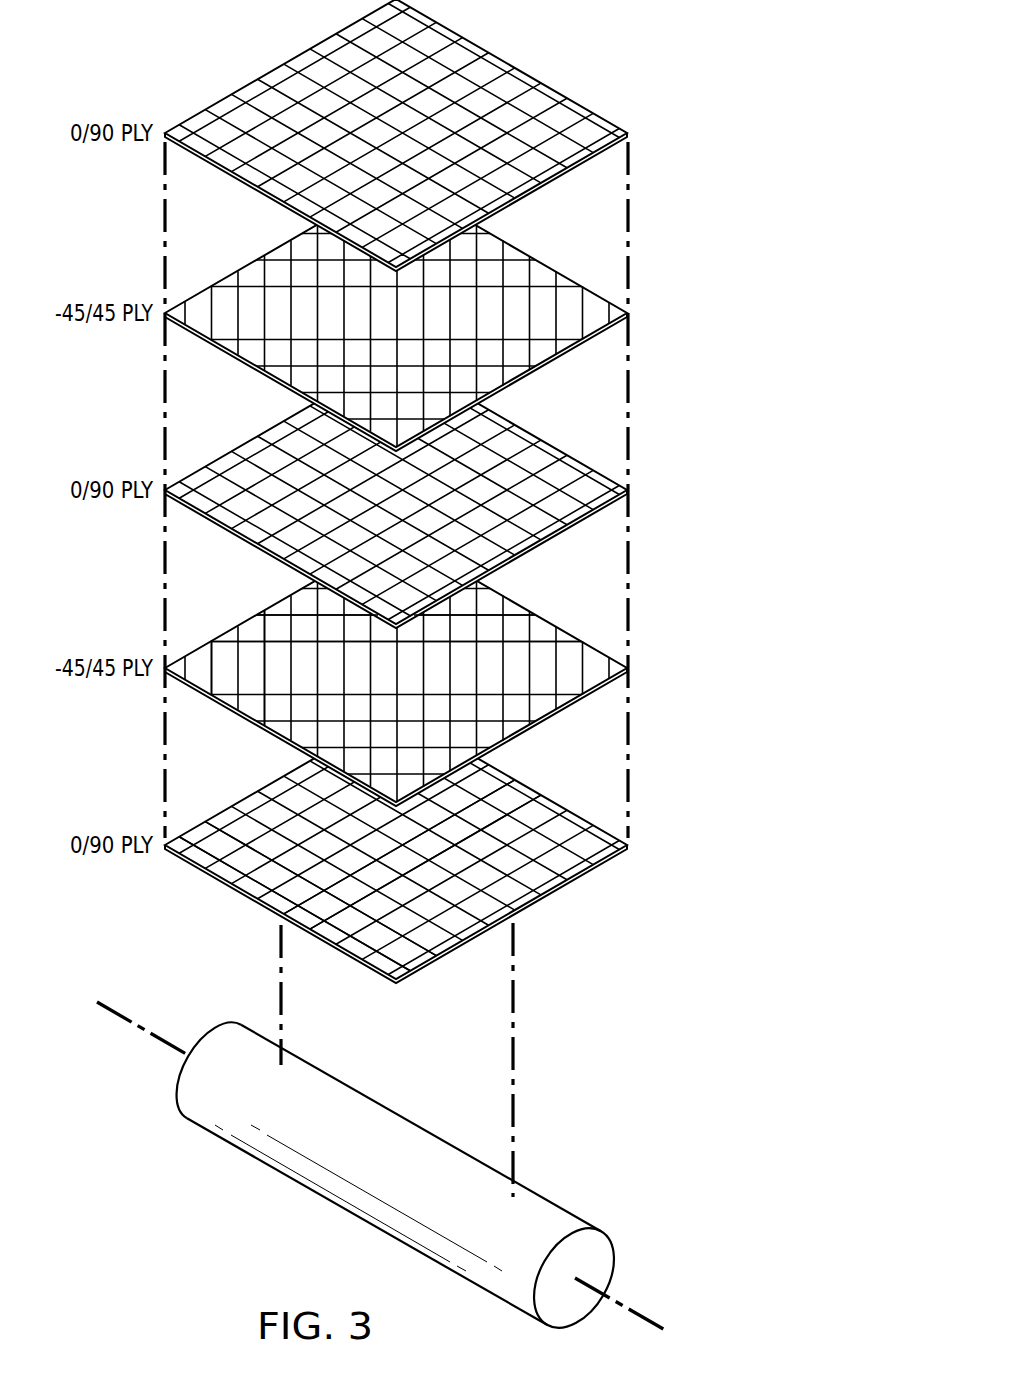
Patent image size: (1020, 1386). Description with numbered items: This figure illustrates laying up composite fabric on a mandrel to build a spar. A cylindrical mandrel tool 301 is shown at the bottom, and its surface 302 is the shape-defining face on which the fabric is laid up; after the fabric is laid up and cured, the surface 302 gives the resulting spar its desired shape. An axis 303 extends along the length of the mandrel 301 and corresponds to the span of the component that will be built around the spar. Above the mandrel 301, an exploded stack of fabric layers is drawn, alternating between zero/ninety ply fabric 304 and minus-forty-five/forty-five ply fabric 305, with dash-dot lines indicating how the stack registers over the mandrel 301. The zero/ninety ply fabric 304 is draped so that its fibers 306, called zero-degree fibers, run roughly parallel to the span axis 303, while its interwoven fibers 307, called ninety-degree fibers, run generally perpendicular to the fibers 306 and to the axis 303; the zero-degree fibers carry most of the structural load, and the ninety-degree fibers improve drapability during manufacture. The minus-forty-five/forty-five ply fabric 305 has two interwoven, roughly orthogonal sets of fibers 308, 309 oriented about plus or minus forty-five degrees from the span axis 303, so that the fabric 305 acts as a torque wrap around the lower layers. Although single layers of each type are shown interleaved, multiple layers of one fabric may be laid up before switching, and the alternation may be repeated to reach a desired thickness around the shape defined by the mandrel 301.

The mandrel tool 301 is at (582, 1170).
The surface 302 is at (321, 1194).
The axis 303 is at (647, 1320).
The 0/90 ply fabric 304 is at (498, 60).
The −45/45 ply fabric 305 is at (566, 272).
The fibers 306 is at (488, 795).
The fibers 307 is at (435, 930).
The fibers 308 is at (263, 630).
The fibers 309 is at (200, 693).